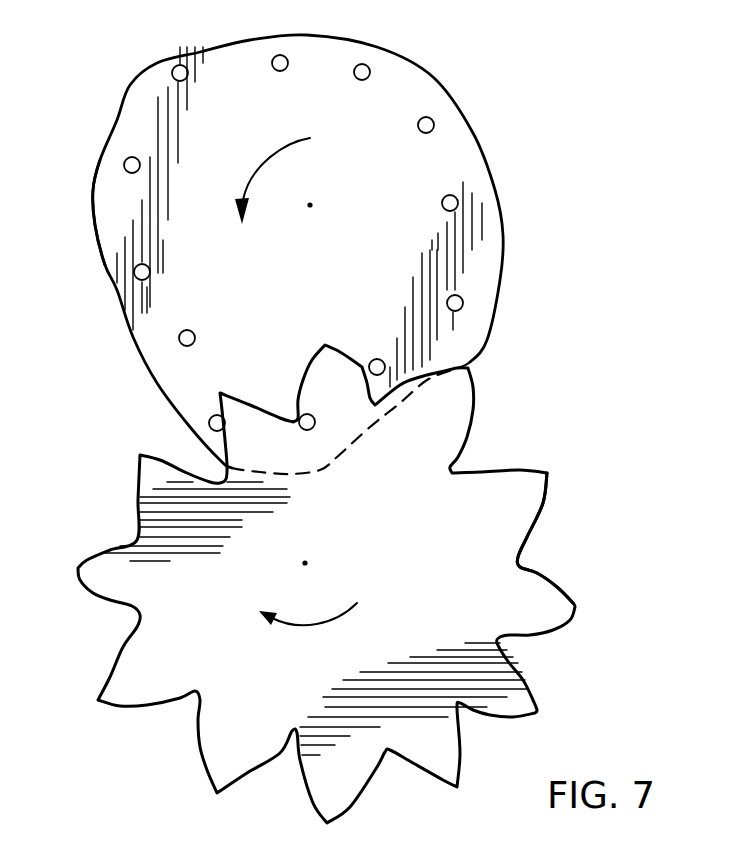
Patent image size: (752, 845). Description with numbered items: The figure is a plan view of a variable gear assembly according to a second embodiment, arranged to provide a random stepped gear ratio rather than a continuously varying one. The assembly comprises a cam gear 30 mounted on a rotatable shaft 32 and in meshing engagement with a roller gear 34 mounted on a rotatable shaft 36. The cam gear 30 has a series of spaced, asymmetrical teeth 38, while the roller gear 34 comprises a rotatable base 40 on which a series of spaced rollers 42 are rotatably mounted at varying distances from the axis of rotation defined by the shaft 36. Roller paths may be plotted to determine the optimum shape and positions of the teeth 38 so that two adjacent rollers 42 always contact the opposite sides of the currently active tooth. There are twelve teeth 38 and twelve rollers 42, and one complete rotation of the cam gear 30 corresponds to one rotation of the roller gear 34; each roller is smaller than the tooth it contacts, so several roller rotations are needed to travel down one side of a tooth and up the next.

The cam gear 30 is at (157, 538).
The rotatable shaft 32 is at (305, 563).
The roller gear 34 is at (518, 277).
The rotatable shaft 36 is at (310, 205).
The asymmetrical teeth 38 is at (543, 502).
The rotatable base 40 is at (113, 212).
The rollers 42 is at (435, 127).